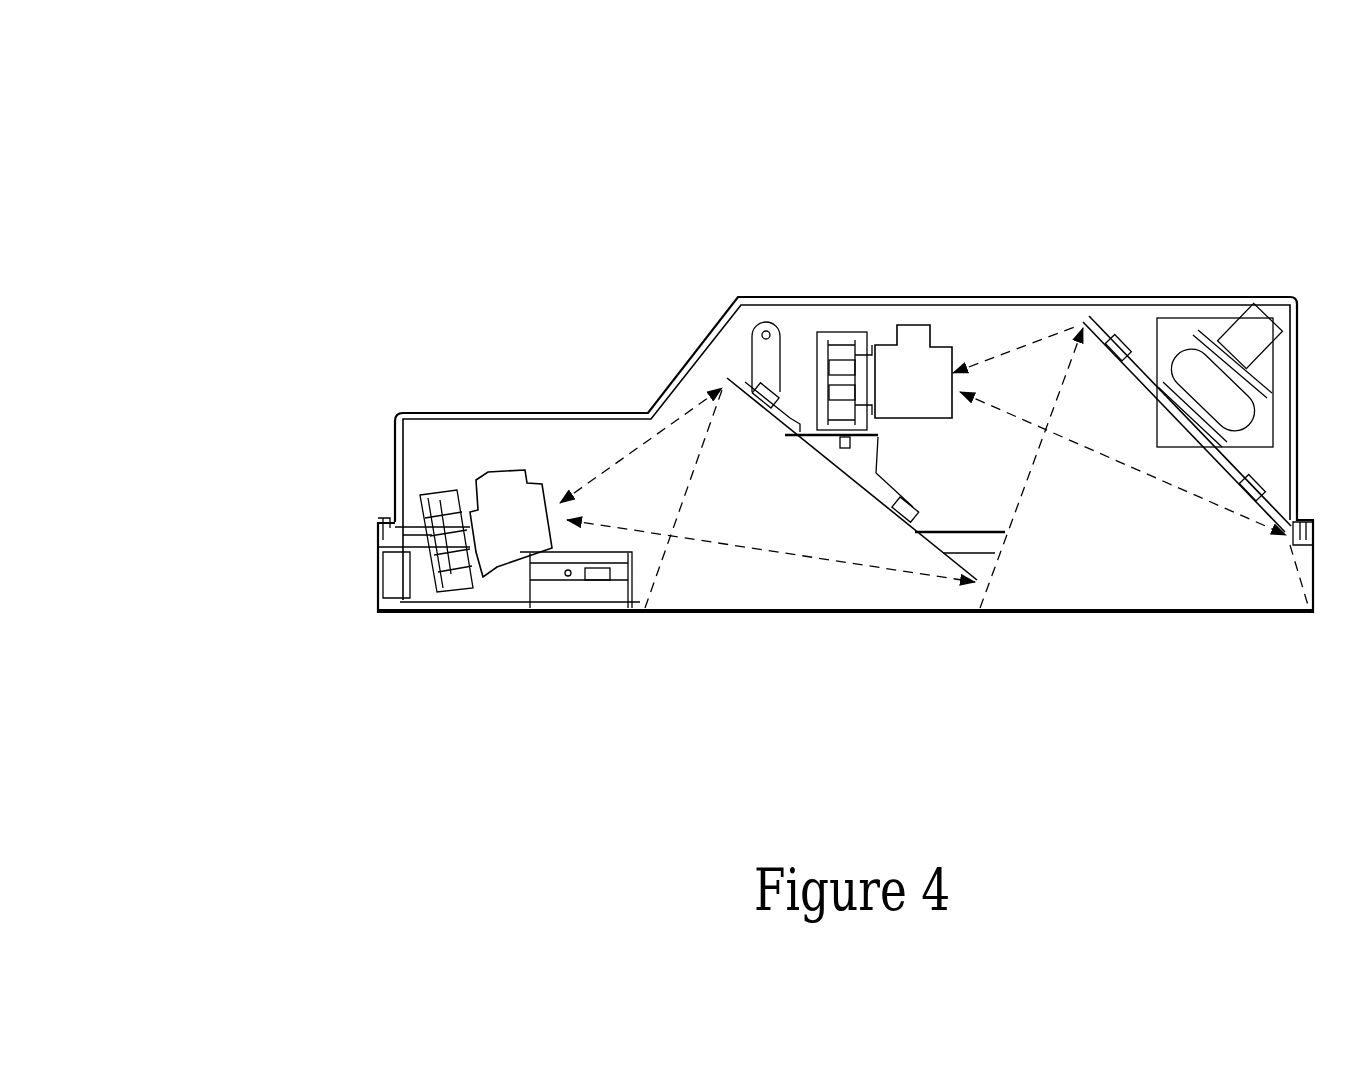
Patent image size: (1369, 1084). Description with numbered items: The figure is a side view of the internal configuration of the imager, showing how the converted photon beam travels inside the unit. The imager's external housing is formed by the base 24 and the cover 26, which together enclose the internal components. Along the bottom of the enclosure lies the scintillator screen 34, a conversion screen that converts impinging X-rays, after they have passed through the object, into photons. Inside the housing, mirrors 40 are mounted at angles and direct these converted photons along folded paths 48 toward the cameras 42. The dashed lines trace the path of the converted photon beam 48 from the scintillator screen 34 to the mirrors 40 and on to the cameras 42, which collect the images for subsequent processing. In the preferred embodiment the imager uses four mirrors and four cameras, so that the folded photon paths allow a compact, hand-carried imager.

The base 24 is at (368, 574).
The cover 26 is at (394, 436).
The scintillator screen 34 is at (1163, 622).
The mirrors 40 is at (720, 372).
The cameras 42 is at (909, 355).
The folded paths 48 is at (628, 457).